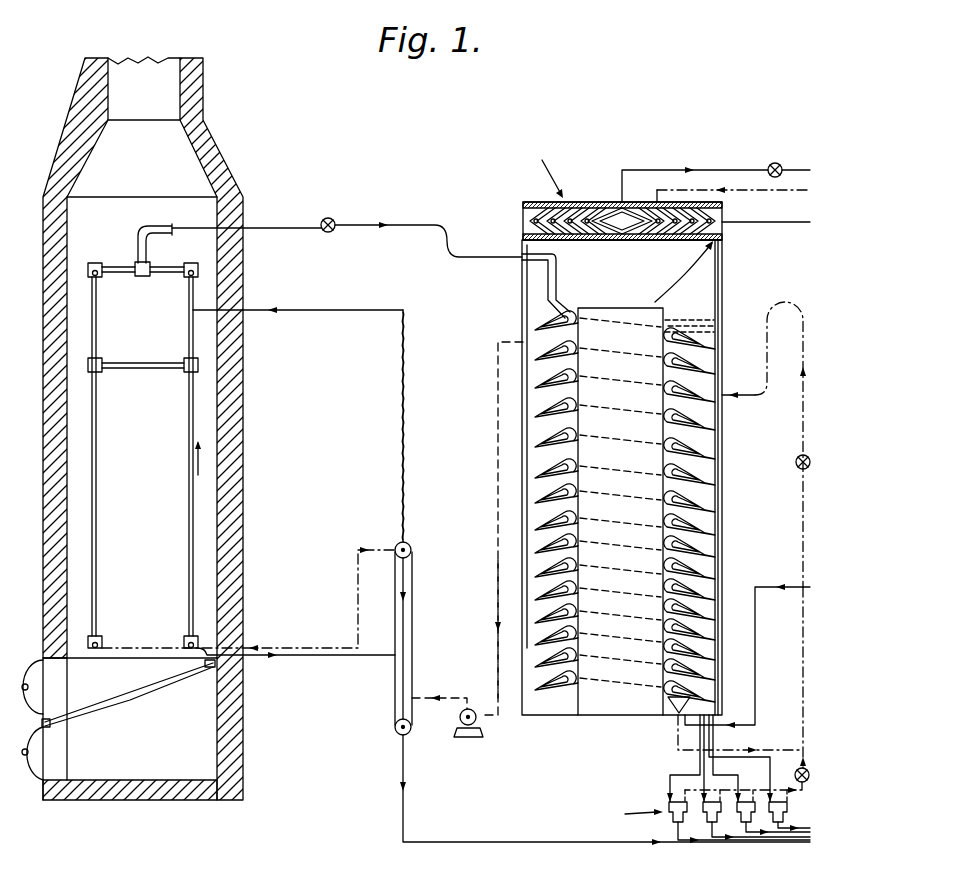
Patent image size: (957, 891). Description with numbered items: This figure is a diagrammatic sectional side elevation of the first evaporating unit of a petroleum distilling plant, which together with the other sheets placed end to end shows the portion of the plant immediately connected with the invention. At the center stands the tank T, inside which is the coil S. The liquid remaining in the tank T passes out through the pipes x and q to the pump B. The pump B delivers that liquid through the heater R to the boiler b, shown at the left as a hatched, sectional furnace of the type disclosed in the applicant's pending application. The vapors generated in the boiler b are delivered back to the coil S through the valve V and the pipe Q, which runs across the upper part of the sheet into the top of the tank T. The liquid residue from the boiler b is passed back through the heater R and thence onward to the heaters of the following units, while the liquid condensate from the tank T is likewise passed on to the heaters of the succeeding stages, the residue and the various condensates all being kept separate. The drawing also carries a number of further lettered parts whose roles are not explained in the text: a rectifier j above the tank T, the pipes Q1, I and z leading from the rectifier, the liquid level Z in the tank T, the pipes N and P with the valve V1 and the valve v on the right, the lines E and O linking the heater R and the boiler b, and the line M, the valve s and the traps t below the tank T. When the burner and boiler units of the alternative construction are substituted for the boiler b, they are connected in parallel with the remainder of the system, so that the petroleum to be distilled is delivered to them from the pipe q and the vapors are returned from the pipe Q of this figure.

The boiler b is at (237, 742).
The pipe Q is at (414, 225).
The valve V is at (328, 218).
The petroleum vapor return line O is at (305, 424).
The liquid petroleum pipe E is at (325, 648).
The heater R is at (403, 676).
The pipe x is at (510, 342).
The pipe q is at (496, 592).
The pump B is at (460, 718).
The rectifier j is at (522, 208).
The outlet pipe Q1 is at (742, 170).
The valve V1 is at (776, 163).
The inlet pipe I is at (766, 192).
The pipe z is at (755, 225).
The tank T is at (622, 477).
The coil S is at (680, 330).
The liquid level Z is at (690, 322).
The pipe N is at (767, 334).
The valve v is at (796, 462).
The pipe P is at (802, 530).
The pipe M is at (677, 743).
The valve s is at (800, 767).
The traps t is at (660, 821).